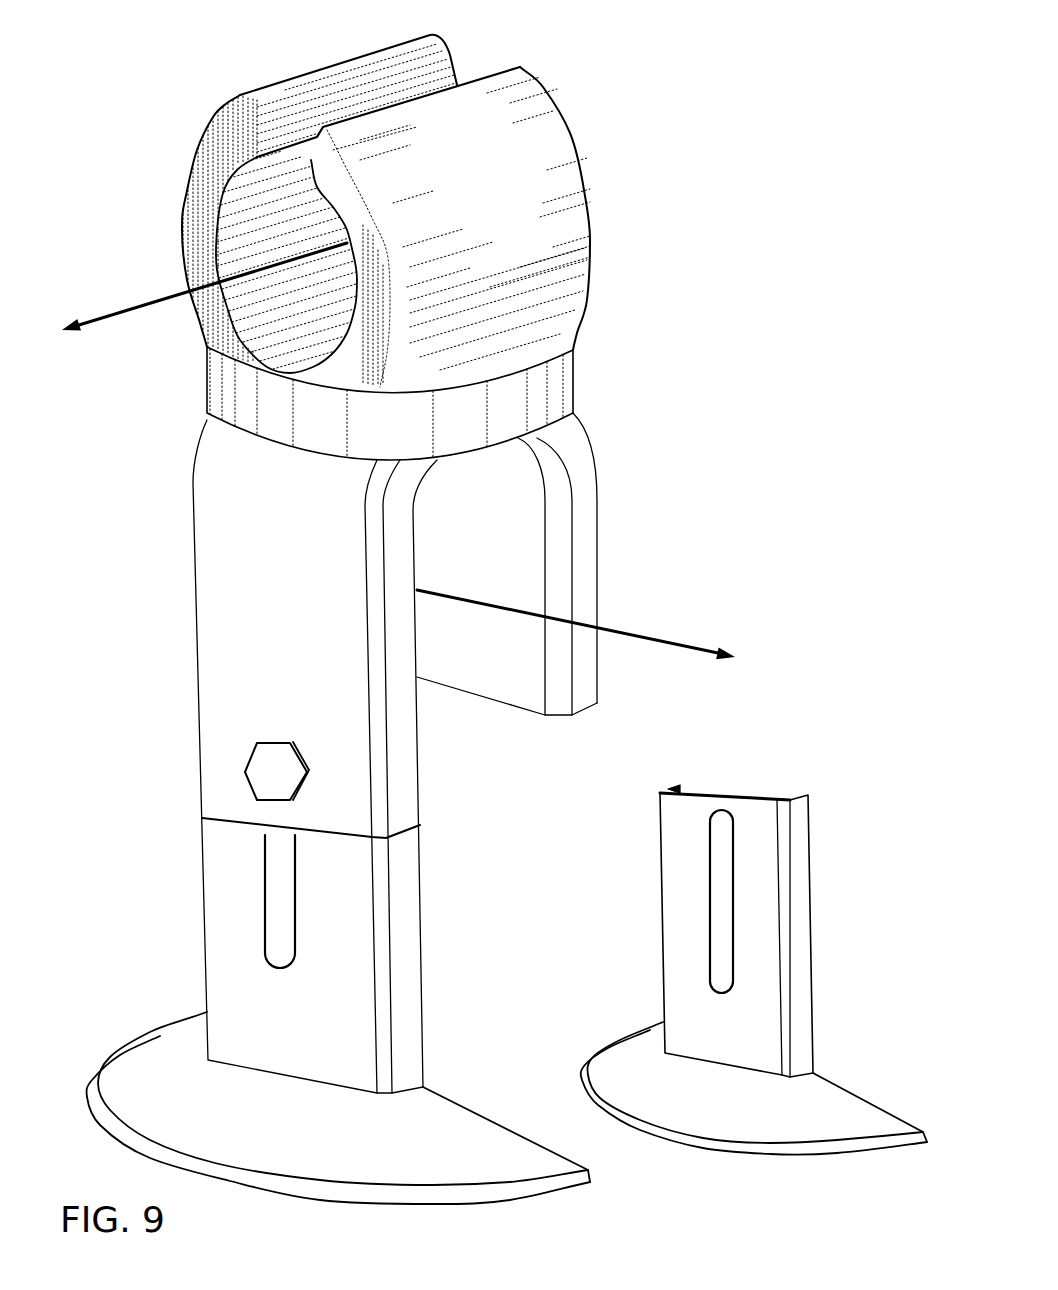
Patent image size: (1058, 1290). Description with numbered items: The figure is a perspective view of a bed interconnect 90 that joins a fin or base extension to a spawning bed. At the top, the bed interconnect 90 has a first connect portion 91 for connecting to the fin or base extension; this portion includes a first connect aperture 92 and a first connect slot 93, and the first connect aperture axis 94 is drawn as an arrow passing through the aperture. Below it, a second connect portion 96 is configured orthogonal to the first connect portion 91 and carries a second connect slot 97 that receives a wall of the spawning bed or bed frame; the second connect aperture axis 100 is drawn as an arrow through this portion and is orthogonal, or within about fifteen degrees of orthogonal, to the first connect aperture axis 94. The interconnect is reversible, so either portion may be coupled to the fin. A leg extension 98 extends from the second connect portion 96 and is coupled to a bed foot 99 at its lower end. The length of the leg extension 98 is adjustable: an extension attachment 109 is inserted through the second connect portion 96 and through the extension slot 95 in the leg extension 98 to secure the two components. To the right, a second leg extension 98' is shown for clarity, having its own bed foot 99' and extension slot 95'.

The bed interconnect 90 is at (253, 67).
The first connect portion 91 is at (202, 198).
The first connect aperture 92 is at (273, 297).
The first connect slot 93 is at (310, 148).
The first connect aperture axis 94 is at (117, 312).
The extension slot 95 is at (207, 901).
The second connect portion 96 is at (582, 522).
The second connect slot 97 is at (513, 580).
The leg extension 98 is at (259, 756).
The bed foot 99 is at (338, 1108).
The second connect aperture axis 100 is at (695, 657).
The extension attachment 109 is at (270, 762).
The second leg extension 98' is at (695, 931).
The extension slot 95' is at (660, 901).
The bed foot 99' is at (754, 1088).